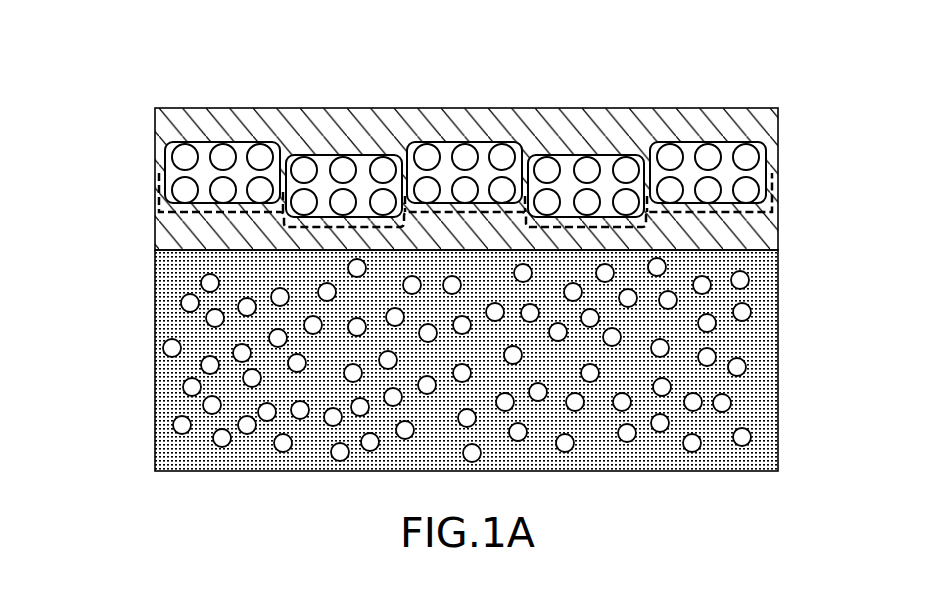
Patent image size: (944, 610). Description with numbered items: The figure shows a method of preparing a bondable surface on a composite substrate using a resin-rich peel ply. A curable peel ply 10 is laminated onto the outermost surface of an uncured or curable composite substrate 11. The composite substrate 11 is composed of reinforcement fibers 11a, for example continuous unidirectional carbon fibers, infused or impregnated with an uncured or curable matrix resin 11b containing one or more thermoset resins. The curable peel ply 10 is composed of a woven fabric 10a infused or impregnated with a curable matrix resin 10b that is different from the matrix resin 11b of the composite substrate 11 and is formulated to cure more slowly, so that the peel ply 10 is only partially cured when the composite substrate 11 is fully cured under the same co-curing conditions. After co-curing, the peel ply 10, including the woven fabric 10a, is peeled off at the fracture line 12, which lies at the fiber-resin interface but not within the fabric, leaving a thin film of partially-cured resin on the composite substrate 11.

The curable peel ply 10 is at (456, 157).
The woven fabric 10a is at (465, 140).
The curable matrix resin 10b is at (192, 123).
The composite substrate 11 is at (449, 363).
The reinforcement fibers 11a is at (185, 302).
The matrix resin 11b is at (172, 450).
The fracture line 12 is at (165, 208).